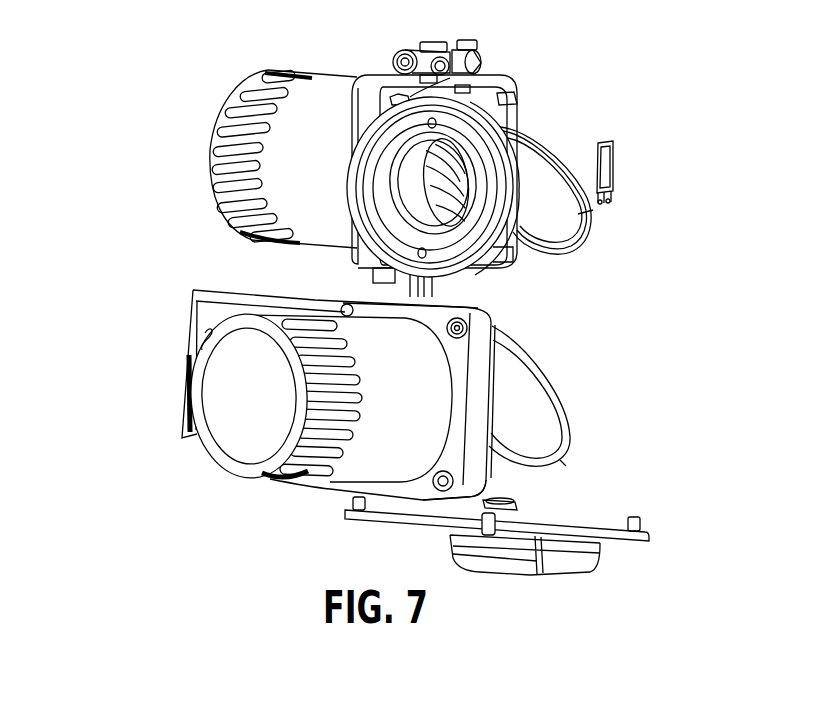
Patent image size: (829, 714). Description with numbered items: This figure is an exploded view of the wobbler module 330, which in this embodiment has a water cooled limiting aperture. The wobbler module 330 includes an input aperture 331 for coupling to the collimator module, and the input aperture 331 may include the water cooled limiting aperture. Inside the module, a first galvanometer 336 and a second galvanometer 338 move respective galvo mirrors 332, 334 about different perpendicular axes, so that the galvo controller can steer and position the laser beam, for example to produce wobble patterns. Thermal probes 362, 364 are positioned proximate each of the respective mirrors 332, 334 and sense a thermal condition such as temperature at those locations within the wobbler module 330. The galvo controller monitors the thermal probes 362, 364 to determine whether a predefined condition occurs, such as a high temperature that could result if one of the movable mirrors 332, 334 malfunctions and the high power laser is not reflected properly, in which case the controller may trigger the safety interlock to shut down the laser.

The wobbler module 330 is at (628, 82).
The input aperture 331 is at (460, 242).
The galvo mirror 332 is at (592, 233).
The galvo mirror 334 is at (572, 422).
The first galvanometer 336 is at (152, 140).
The second galvanometer 338 is at (237, 494).
The thermal probe 362 is at (613, 151).
The thermal probe 364 is at (520, 506).